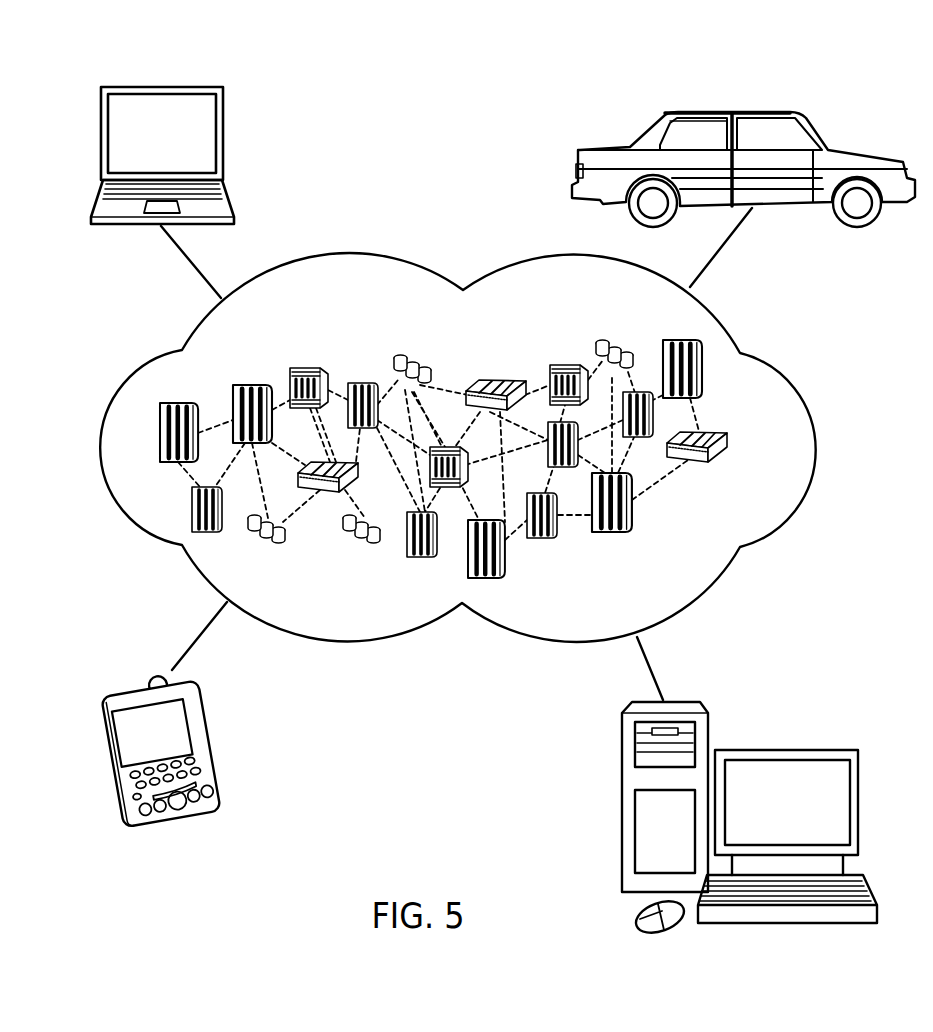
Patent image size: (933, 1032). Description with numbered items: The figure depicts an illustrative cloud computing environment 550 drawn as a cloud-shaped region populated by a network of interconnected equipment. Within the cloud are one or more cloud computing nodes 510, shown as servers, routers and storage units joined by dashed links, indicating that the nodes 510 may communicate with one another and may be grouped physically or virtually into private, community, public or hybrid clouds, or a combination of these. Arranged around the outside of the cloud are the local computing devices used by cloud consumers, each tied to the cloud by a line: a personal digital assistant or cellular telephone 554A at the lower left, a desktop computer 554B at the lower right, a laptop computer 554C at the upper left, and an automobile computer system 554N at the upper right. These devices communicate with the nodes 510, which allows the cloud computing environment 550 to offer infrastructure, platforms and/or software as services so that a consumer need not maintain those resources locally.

The laptop computer 554C is at (160, 85).
The automobile computer system 554N is at (722, 110).
The cloud computing environment 550 is at (797, 356).
The cloud computing node 510 is at (737, 447).
The personal digital assistant or cellular telephone 554A is at (140, 688).
The desktop computer 554B is at (786, 750).